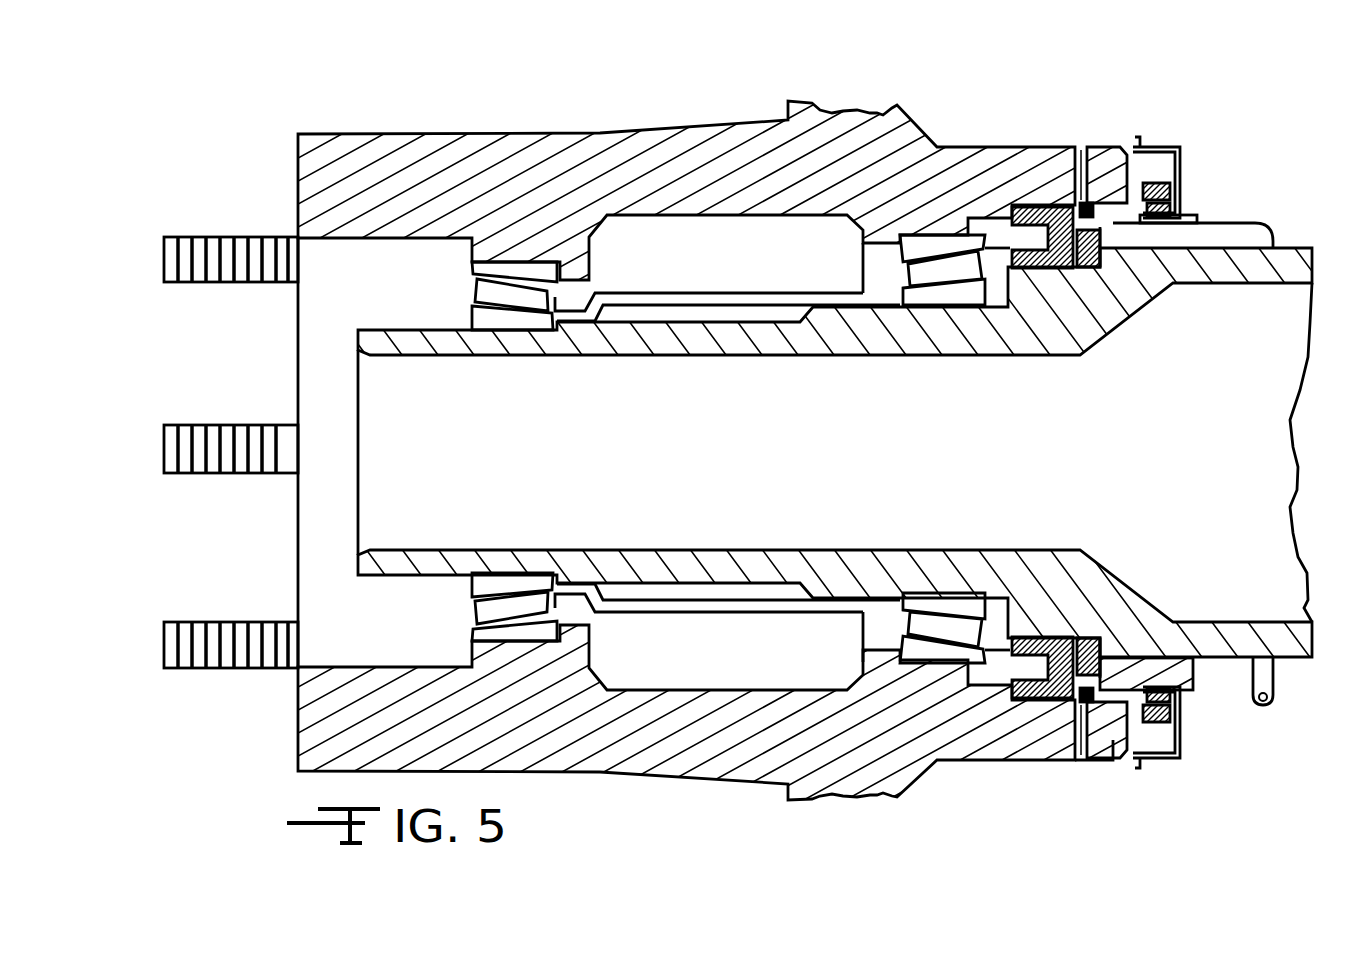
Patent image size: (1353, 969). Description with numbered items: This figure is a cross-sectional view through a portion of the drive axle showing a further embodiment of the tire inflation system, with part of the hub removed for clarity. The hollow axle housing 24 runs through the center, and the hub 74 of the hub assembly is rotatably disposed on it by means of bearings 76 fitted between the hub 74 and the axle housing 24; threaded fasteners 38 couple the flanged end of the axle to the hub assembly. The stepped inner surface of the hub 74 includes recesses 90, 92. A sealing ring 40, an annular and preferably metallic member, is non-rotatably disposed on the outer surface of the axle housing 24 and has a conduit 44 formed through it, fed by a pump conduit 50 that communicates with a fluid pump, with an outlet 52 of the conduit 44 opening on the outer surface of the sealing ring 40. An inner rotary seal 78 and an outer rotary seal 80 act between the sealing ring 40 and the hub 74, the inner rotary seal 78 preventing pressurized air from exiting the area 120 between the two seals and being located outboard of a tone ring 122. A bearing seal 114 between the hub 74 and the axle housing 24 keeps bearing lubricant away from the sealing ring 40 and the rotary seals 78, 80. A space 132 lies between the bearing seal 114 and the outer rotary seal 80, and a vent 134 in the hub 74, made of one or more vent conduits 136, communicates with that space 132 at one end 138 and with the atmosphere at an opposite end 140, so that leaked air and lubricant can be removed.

The hub 74 is at (362, 147).
The bearings 76 is at (897, 270).
The threaded fasteners 38 is at (165, 242).
The axle housing 24 is at (1315, 247).
The bearing seal 114 is at (1027, 203).
The vent 134 is at (1030, 200).
The vent conduits 136 is at (1067, 157).
The opposite end 140 is at (1080, 153).
The outer rotary seal 80 is at (1100, 170).
The inner rotary seal 78 is at (1128, 150).
The tone ring 122 is at (1155, 145).
The area 120 is at (1170, 150).
The conduit 44 is at (1173, 233).
The outlet 52 is at (1143, 277).
The sealing ring 40 is at (1107, 227).
The space 132 is at (1100, 237).
The end 138 is at (1085, 227).
The recess 92 is at (1023, 760).
The recess 90 is at (1097, 760).
The pump conduit 50 is at (1268, 703).